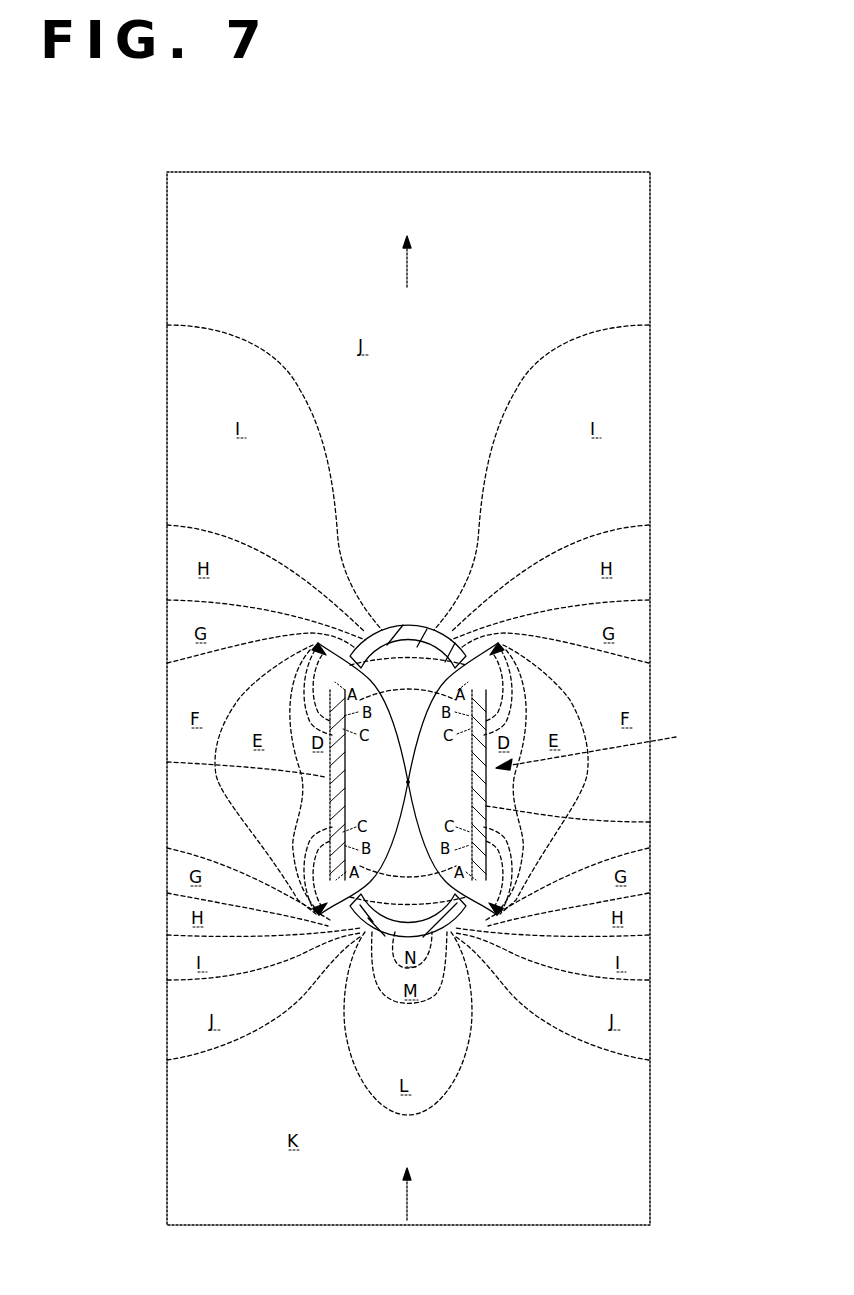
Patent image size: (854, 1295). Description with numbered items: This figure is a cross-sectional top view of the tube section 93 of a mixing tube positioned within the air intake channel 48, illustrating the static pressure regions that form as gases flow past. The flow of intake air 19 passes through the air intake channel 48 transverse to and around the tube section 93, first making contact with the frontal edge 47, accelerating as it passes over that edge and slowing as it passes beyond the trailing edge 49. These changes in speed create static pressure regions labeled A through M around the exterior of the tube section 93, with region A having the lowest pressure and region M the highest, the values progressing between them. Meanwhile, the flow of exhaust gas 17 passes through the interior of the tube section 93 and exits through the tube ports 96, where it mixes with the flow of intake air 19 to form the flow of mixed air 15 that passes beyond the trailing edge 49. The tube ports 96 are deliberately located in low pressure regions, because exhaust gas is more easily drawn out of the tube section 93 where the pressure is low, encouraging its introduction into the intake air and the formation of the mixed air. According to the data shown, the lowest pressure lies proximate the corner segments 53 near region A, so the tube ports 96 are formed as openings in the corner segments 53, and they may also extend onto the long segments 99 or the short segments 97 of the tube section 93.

The flow of mixed air 15 is at (410, 260).
The flow of exhaust gas 17 is at (400, 756).
The flow of intake air 19 is at (412, 1168).
The frontal edge 47 is at (433, 1000).
The air intake channel 48 is at (167, 822).
The trailing edge 49 is at (416, 623).
The corner segments 53 is at (408, 783).
The tube section 93 is at (599, 747).
The tube ports 96 is at (408, 779).
The short segments 97 is at (402, 623).
The long segments 99 is at (167, 762).